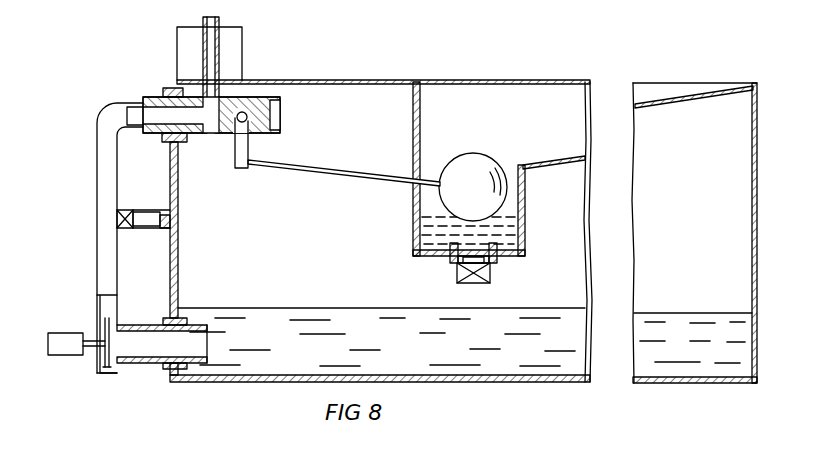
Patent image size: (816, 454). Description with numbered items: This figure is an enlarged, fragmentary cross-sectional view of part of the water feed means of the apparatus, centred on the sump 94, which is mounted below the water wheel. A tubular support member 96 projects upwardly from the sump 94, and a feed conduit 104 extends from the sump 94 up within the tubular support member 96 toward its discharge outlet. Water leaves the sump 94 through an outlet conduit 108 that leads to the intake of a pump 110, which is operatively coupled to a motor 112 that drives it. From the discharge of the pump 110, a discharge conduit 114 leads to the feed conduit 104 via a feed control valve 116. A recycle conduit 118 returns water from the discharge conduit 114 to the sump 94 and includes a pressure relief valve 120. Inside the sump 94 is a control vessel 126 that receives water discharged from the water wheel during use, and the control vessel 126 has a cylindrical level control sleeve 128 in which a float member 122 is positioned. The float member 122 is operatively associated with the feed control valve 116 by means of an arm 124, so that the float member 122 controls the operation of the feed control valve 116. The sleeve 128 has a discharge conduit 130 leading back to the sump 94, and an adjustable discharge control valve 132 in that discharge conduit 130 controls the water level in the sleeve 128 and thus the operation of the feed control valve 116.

The sump 94 is at (766, 104).
The tubular support member 96 is at (232, 39).
The feed conduit 104 is at (213, 64).
The outlet conduit 108 is at (148, 354).
The pump 110 is at (107, 369).
The motor 112 is at (63, 338).
The discharge conduit 114 is at (103, 172).
The feed control valve 116 is at (205, 143).
The recycle conduit 118 is at (143, 230).
The pressure relief valve 120 is at (125, 214).
The float member 122 is at (474, 165).
The arm 124 is at (338, 164).
The control vessel 126 is at (566, 166).
The level control sleeve 128 is at (520, 208).
The discharge conduit 130 is at (492, 276).
The adjustable discharge control valve 132 is at (468, 283).